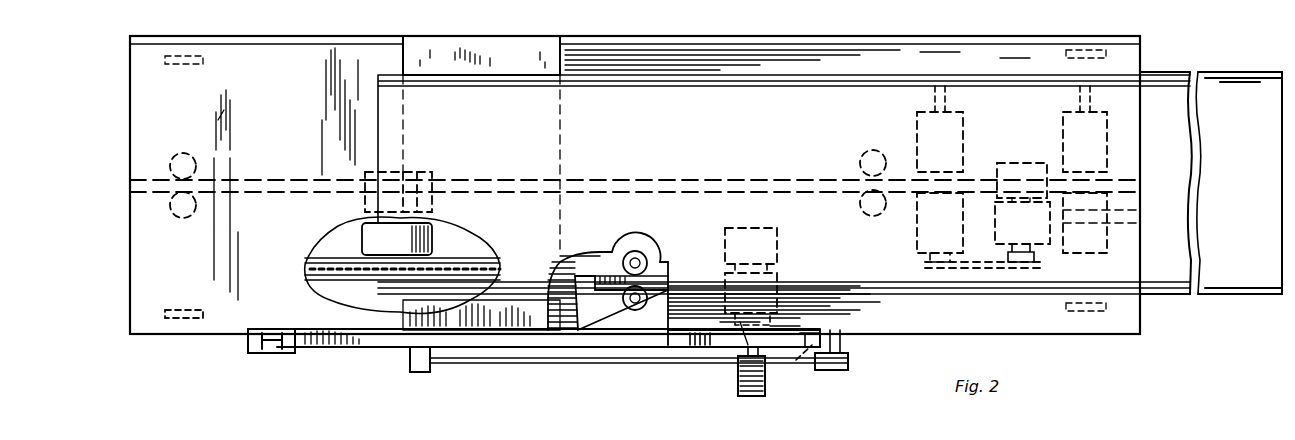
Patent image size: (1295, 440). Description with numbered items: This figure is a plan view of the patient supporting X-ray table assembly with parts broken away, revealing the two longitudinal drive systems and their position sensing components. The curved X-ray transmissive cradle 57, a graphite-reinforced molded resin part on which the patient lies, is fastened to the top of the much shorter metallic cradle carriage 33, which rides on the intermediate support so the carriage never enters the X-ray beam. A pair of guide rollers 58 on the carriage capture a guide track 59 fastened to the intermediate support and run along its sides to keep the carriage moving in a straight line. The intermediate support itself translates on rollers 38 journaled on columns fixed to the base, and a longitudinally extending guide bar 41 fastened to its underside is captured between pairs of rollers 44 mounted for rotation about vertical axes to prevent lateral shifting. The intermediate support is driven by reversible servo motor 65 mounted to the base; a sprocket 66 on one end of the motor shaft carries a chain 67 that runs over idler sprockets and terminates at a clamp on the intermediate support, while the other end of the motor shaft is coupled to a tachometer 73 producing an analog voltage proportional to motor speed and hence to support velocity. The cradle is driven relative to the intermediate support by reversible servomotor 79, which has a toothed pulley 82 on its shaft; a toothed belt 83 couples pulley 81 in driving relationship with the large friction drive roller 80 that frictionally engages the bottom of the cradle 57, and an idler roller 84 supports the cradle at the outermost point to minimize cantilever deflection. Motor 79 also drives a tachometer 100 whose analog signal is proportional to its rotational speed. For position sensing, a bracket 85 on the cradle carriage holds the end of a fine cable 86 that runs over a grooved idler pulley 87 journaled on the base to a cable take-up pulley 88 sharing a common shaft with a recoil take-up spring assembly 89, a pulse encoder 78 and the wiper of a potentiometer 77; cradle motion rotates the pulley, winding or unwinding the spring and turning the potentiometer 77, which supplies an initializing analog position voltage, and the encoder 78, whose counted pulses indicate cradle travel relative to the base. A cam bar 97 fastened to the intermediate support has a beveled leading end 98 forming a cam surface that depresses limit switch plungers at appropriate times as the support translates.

The cradle carriage 33 is at (575, 48).
The cradle 57 is at (1170, 72).
The guide rollers 58 is at (870, 152).
The guide track 59 is at (640, 180).
The tachometer 73 is at (425, 172).
The servo motor 65 is at (345, 228).
The sprocket 66 is at (390, 280).
The chain 67 is at (462, 282).
The rollers 38 is at (190, 308).
The guide bar 41 is at (662, 277).
The rollers 44 is at (630, 306).
The potentiometer 77 is at (758, 244).
The pulse encoder 78 is at (772, 282).
The friction drive roller 80 is at (917, 125).
The idler roller 84 is at (1075, 122).
The tachometer 100 is at (1020, 162).
The servomotor 79 is at (1140, 222).
The toothed pulley 82 is at (917, 272).
The pulley 81 is at (1030, 272).
The toothed belt 83 is at (982, 270).
The bracket 85 is at (410, 360).
The cable 86 is at (530, 364).
The cam bar 97 is at (690, 342).
The take-up spring assembly 89 is at (728, 342).
The cable take-up pulley 88 is at (740, 394).
The leading end 98 is at (806, 360).
The idler pulley 87 is at (838, 372).